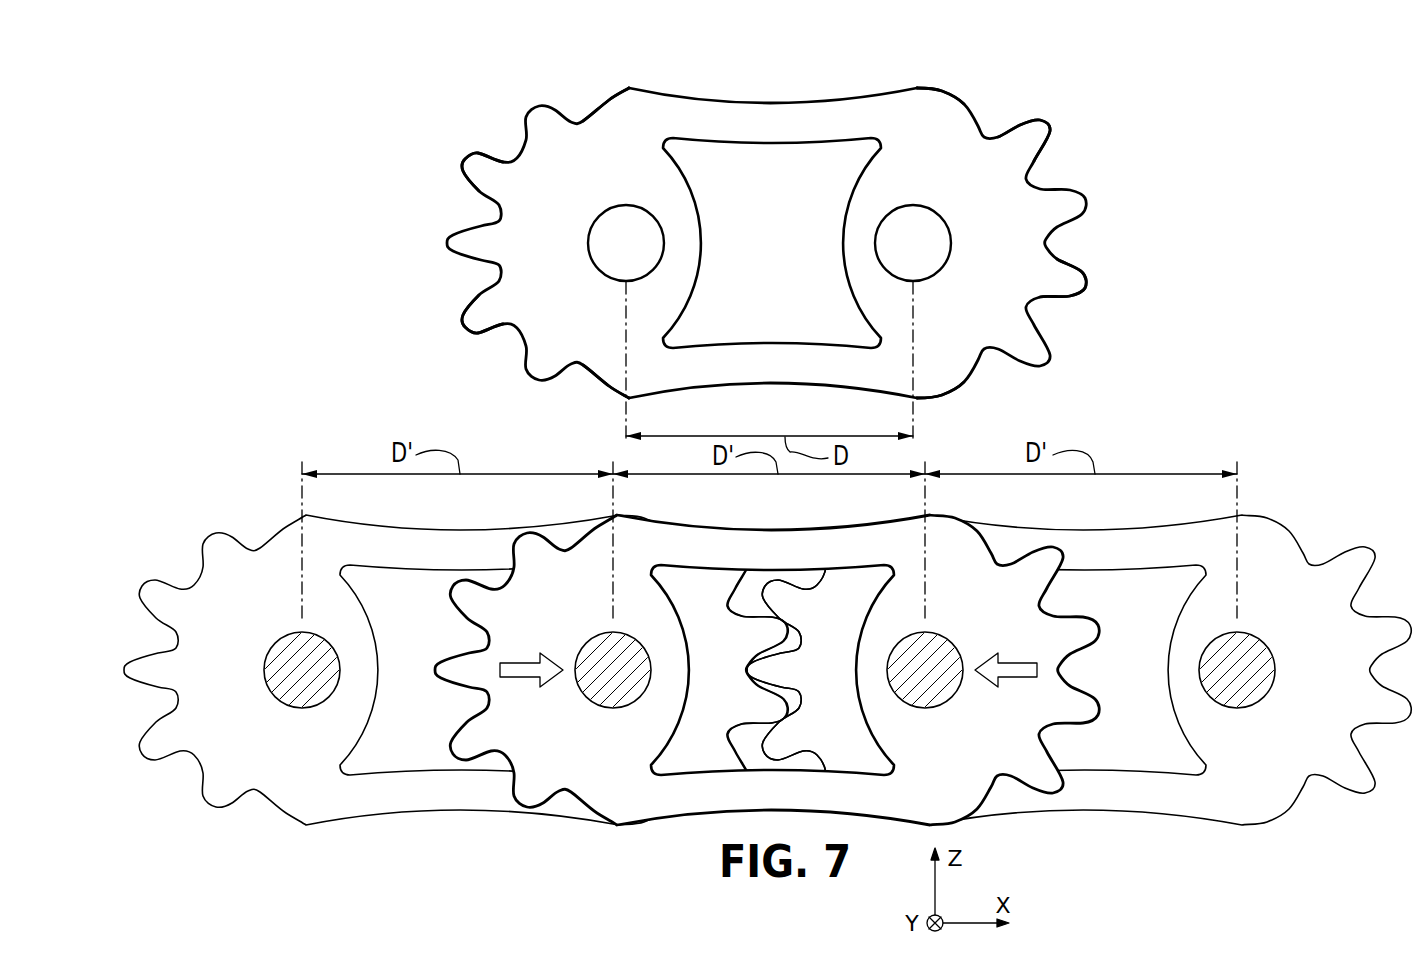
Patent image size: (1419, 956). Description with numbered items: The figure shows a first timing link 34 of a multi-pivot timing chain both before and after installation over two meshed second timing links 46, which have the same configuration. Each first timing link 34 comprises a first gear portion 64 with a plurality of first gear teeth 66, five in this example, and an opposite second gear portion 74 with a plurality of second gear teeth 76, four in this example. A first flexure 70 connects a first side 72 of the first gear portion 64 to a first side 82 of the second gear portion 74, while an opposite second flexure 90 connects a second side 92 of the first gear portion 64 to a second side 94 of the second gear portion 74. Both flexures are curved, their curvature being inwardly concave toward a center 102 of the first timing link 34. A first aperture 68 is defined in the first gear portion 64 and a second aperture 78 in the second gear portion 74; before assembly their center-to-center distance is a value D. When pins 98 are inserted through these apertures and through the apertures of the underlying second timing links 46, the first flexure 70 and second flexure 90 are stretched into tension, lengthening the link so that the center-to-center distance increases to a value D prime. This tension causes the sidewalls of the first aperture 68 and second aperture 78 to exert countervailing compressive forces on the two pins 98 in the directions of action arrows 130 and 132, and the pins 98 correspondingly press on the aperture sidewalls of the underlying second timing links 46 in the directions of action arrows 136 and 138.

The first timing link 34 is at (771, 419).
The second timing link 46 is at (467, 538).
The first gear portion 64 is at (426, 235).
The first gear teeth 66 is at (470, 157).
The first aperture 68 is at (591, 233).
The first flexure 70 is at (773, 112).
The first side of the first gear portion 72 is at (576, 84).
The second gear portion 74 is at (1114, 235).
The second gear teeth 76 is at (1046, 122).
The second aperture 78 is at (936, 268).
The first side of the second gear portion 82 is at (972, 94).
The second flexure 90 is at (766, 354).
The second side of the first gear portion 92 is at (576, 404).
The second side of the second gear portion 94 is at (974, 404).
The pin 98 is at (604, 710).
The center of the first timing link 102 is at (752, 257).
The action arrow 130 is at (526, 662).
The action arrow 132 is at (1018, 662).
The action arrow 136 is at (730, 670).
The action arrow 138 is at (797, 670).